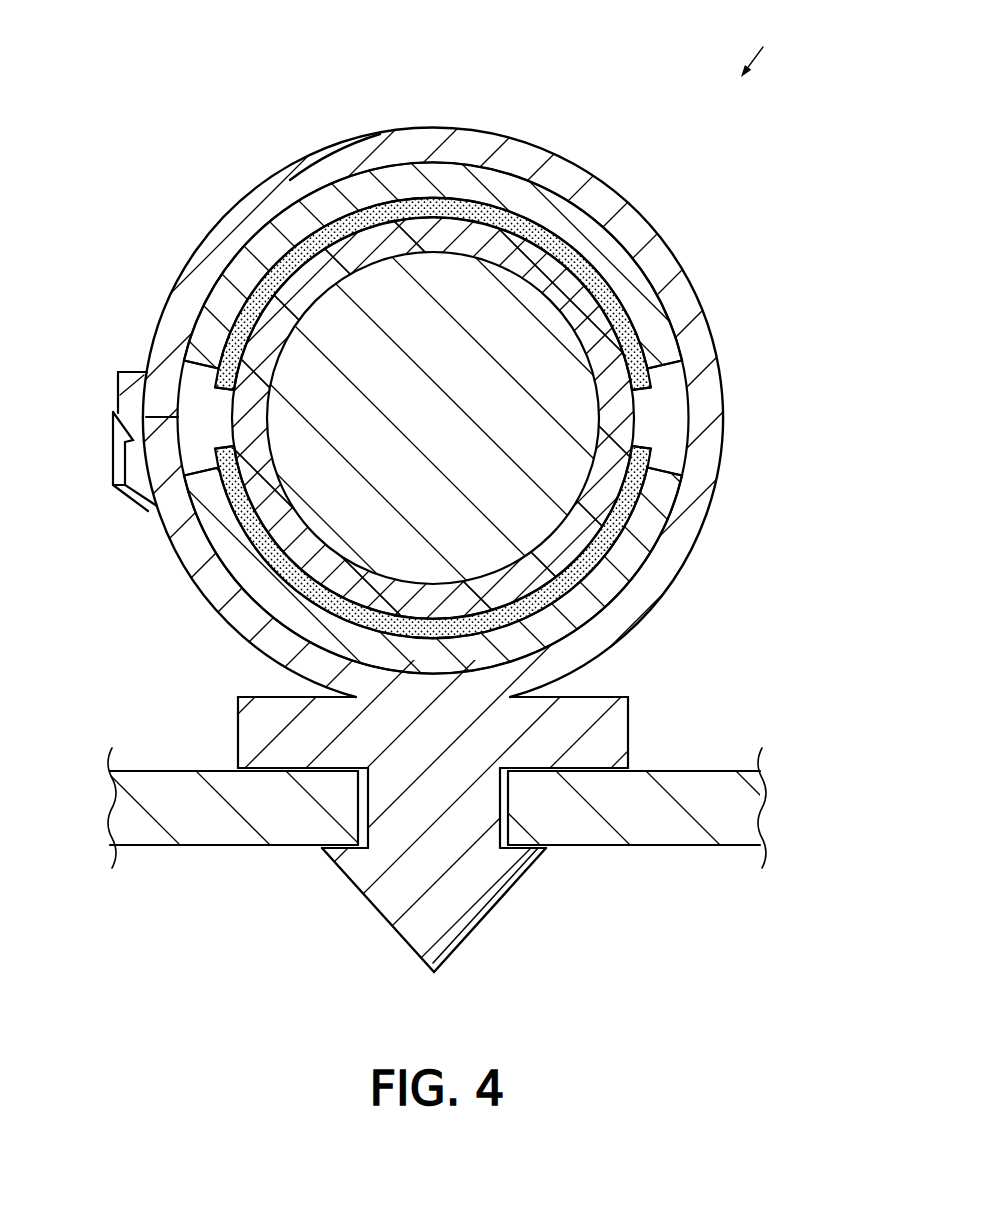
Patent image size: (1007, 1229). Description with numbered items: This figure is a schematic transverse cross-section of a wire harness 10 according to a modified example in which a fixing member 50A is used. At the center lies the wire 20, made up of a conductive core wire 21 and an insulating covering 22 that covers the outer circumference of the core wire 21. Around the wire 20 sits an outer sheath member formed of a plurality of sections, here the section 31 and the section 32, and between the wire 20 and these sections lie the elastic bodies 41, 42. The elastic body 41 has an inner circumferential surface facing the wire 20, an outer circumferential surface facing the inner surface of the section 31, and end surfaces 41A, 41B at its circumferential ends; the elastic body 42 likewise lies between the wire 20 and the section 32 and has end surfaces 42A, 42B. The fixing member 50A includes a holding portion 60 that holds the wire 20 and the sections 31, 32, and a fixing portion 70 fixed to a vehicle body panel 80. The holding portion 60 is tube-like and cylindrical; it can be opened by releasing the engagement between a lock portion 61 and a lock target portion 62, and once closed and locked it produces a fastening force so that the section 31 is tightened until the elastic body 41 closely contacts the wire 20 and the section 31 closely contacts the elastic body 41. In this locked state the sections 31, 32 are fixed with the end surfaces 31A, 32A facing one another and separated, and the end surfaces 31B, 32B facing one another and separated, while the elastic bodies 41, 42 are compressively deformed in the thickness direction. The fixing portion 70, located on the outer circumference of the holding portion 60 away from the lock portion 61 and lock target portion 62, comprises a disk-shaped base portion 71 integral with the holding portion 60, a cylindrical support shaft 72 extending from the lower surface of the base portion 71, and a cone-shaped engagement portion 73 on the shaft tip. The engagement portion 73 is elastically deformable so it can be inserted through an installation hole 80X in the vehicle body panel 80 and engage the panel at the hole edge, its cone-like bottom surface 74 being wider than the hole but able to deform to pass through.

The pipe holding structure 10 is at (765, 44).
The wire 20 is at (525, 418).
The core wire 21 is at (540, 500).
The insulating covering 22 is at (557, 552).
The section 31 is at (441, 377).
The end surface 31A is at (684, 366).
The end surface 31B is at (190, 367).
The section 32 is at (431, 420).
The end surface 32A is at (684, 466).
The end surface 32B is at (180, 478).
The elastic body 41 is at (507, 266).
The end surface 41A is at (655, 392).
The end surface 41B is at (240, 388).
The elastic body 42 is at (455, 529).
The end surface 42A is at (655, 443).
The end surface 42B is at (238, 456).
The fixing member 50A is at (356, 139).
The holding portion 60 is at (394, 524).
The lock portion 61 is at (119, 386).
The lock target portion 62 is at (113, 442).
The fixing portion 70 is at (444, 798).
The base portion 71 is at (238, 722).
The support shaft 72 is at (480, 805).
The engagement portion 73 is at (455, 898).
The bottom surface 74 is at (323, 847).
The vehicle body panel 80 is at (437, 837).
The installation hole 80X is at (362, 810).